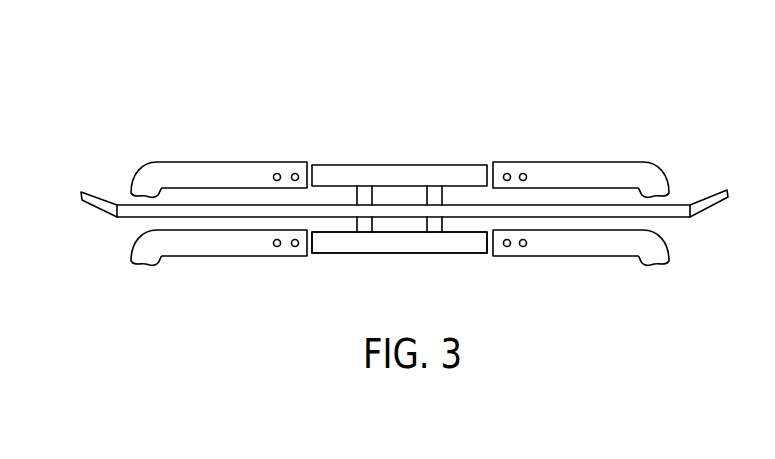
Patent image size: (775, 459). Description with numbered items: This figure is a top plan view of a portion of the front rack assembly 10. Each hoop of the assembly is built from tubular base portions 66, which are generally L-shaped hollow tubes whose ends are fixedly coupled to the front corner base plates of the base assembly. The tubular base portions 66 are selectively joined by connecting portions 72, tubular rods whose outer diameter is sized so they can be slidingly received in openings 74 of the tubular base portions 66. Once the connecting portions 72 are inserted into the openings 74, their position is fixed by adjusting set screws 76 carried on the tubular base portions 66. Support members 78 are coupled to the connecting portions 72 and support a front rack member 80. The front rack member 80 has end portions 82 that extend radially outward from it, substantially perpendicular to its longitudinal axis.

The front rack assembly 10 is at (183, 78).
The tubular base portion 66 is at (640, 162).
The connecting portion 72 is at (427, 222).
The opening 74 is at (313, 165).
The set screw 76 is at (295, 247).
The support member 78 is at (342, 253).
The front rack member 80 is at (148, 162).
The end portion 82 is at (92, 192).